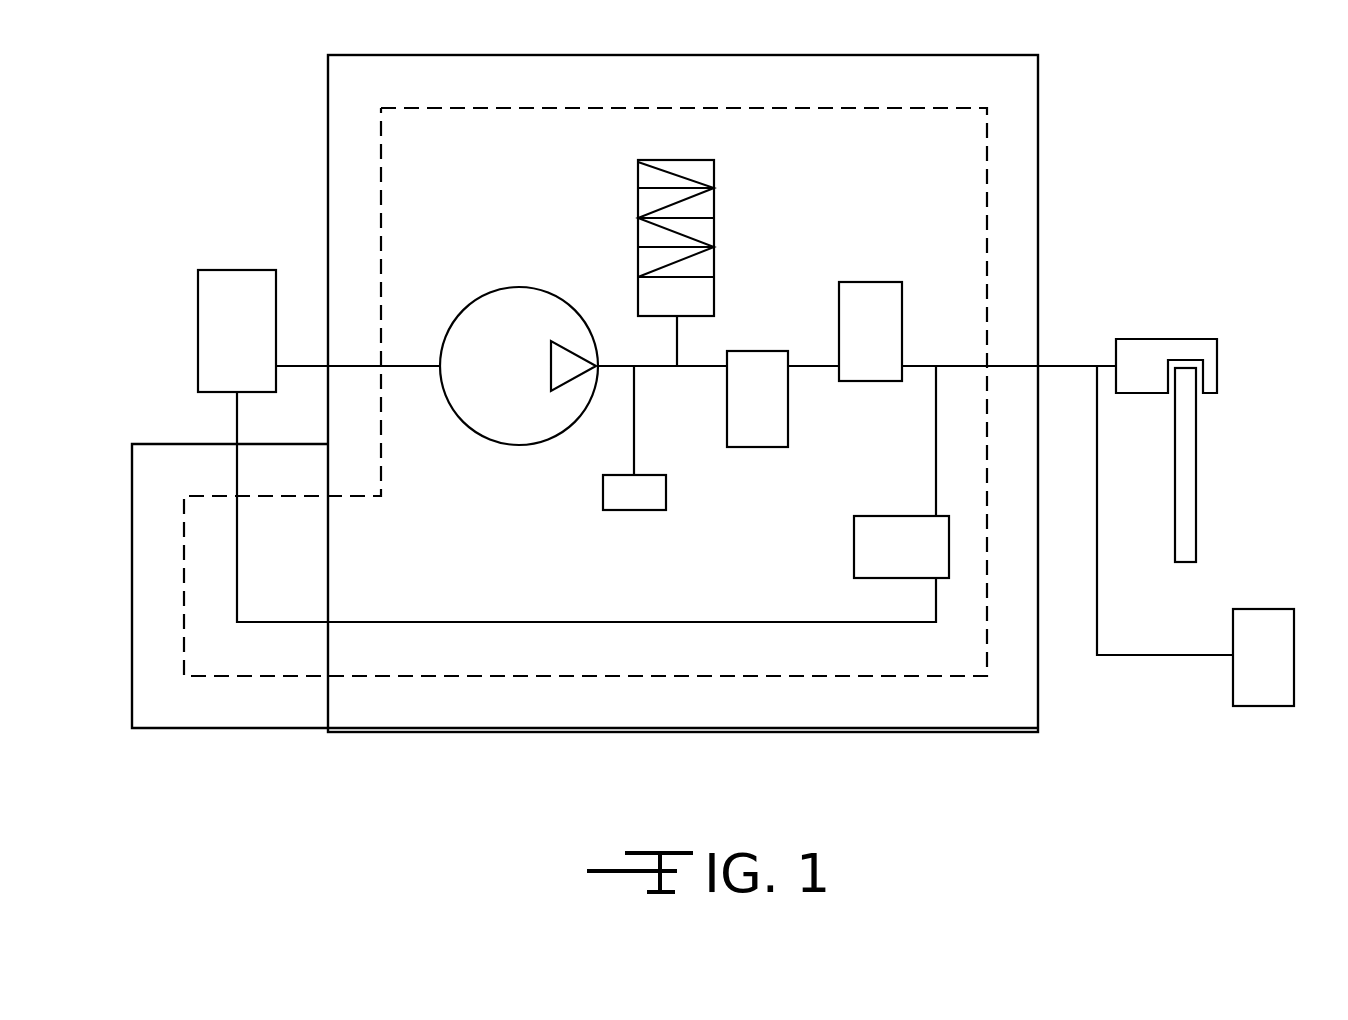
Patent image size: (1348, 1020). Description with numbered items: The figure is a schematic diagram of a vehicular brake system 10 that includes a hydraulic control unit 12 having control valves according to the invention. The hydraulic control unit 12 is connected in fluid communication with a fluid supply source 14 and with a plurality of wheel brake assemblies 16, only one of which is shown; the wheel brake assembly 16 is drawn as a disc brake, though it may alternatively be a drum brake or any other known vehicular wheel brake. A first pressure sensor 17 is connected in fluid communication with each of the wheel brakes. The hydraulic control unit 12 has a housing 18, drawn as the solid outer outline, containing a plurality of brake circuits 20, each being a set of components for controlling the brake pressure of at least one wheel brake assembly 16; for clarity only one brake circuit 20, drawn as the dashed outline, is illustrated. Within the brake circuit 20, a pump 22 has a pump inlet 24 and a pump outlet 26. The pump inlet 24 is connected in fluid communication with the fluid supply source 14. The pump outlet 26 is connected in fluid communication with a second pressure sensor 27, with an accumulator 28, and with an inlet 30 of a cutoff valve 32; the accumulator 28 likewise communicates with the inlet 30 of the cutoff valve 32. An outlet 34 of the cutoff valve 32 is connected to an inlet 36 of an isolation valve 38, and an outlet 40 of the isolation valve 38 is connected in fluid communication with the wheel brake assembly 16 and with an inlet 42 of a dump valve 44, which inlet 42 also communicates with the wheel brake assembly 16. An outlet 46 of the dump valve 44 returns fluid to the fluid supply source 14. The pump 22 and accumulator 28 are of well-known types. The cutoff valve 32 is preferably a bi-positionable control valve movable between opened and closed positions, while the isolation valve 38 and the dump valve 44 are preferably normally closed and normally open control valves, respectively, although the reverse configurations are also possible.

The vehicular brake system 10 is at (100, 100).
The hydraulic control unit 12 is at (326, 136).
The fluid supply source 14 is at (198, 295).
The wheel brake assembly 16 is at (1137, 337).
The first pressure sensor 17 is at (1257, 609).
The housing 18 is at (390, 55).
The brake circuit 20 is at (627, 108).
The pump 22 is at (515, 452).
The pump inlet 24 is at (438, 362).
The pump outlet 26 is at (598, 364).
The second pressure sensor 27 is at (603, 492).
The accumulator 28 is at (714, 173).
The inlet of cutoff valve 30 is at (727, 352).
The cutoff valve 32 is at (760, 447).
The outlet of cutoff valve 34 is at (790, 365).
The inlet of isolation valve 36 is at (838, 369).
The isolation valve 38 is at (880, 282).
The outlet of isolation valve 40 is at (902, 365).
The inlet of dump valve 42 is at (934, 514).
The dump valve 44 is at (854, 558).
The outlet of dump valve 46 is at (936, 580).